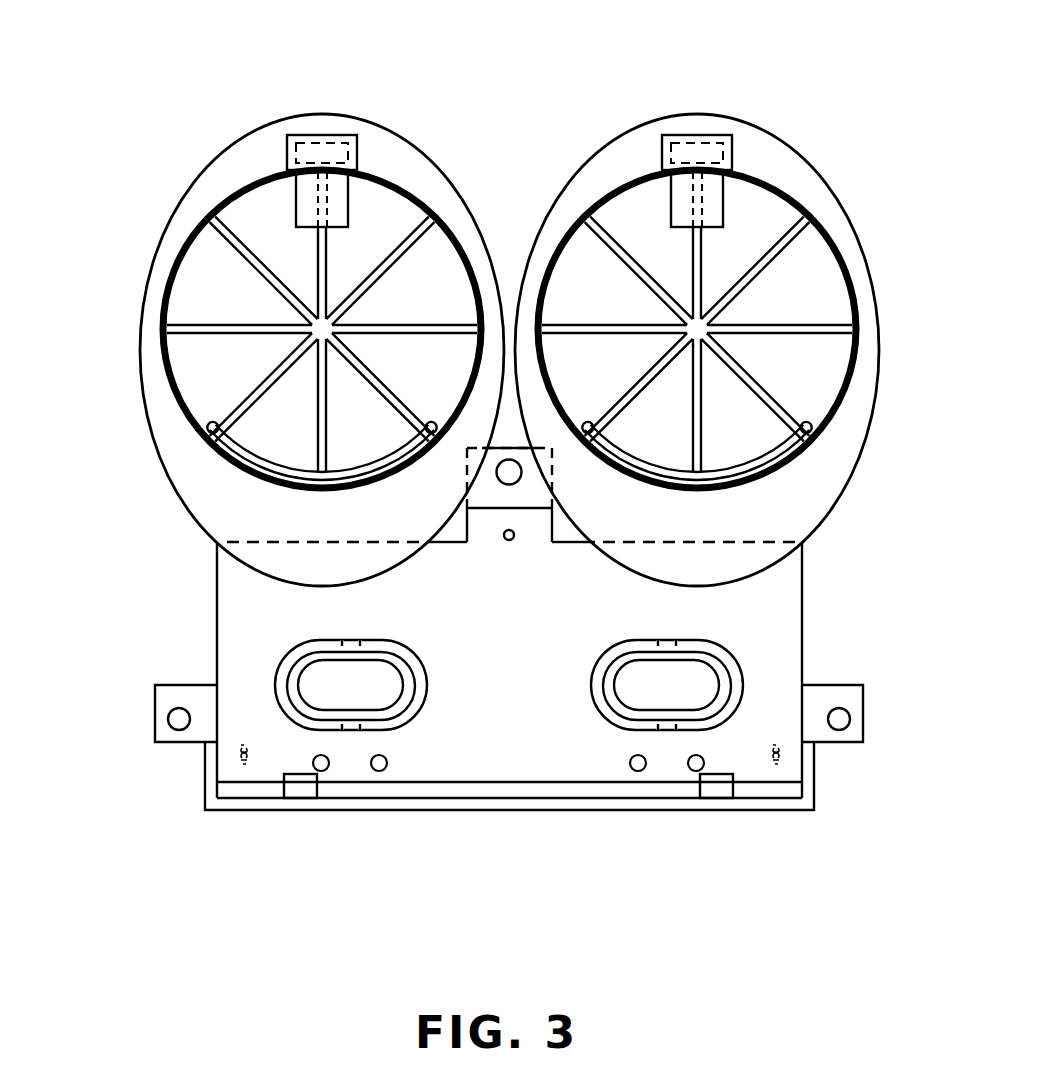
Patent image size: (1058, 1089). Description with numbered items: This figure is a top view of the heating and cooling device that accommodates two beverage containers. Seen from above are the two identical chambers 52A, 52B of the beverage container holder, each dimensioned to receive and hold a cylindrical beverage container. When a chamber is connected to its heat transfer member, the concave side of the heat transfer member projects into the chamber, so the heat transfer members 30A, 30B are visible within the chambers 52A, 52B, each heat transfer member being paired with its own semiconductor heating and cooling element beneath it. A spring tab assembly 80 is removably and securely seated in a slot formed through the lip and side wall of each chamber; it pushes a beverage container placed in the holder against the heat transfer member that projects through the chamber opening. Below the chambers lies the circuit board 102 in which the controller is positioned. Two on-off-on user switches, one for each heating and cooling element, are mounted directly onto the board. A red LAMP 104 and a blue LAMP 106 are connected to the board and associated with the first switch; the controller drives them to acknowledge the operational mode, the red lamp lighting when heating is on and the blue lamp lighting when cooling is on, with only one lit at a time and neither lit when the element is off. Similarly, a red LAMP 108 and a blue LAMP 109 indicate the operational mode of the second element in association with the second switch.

The heat transfer member 30A is at (217, 450).
The heat transfer member 30B is at (802, 450).
The chamber 52A is at (400, 167).
The chamber 52B is at (773, 157).
The spring tab assembly 80 is at (323, 152).
The circuit board 102 is at (509, 629).
The red LAMP 104 is at (325, 771).
The blue LAMP 106 is at (384, 771).
The red LAMP 108 is at (634, 771).
The blue LAMP 109 is at (694, 771).